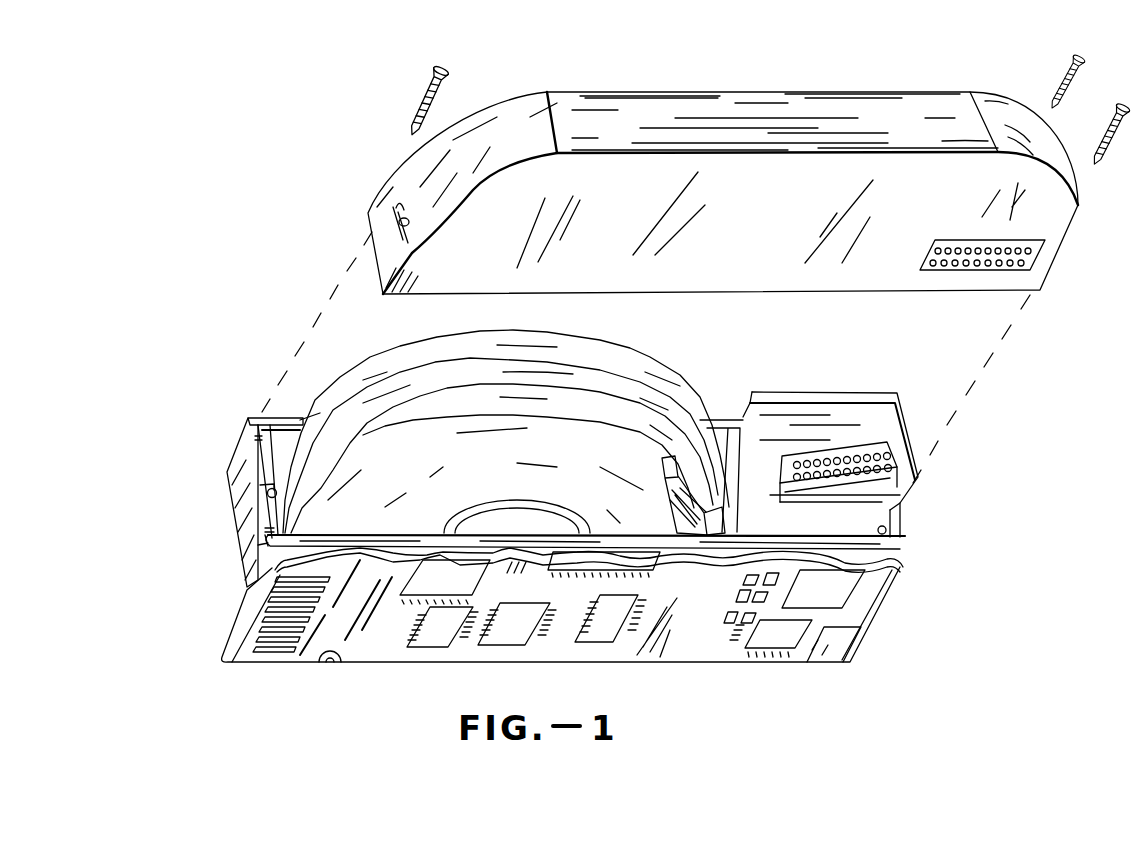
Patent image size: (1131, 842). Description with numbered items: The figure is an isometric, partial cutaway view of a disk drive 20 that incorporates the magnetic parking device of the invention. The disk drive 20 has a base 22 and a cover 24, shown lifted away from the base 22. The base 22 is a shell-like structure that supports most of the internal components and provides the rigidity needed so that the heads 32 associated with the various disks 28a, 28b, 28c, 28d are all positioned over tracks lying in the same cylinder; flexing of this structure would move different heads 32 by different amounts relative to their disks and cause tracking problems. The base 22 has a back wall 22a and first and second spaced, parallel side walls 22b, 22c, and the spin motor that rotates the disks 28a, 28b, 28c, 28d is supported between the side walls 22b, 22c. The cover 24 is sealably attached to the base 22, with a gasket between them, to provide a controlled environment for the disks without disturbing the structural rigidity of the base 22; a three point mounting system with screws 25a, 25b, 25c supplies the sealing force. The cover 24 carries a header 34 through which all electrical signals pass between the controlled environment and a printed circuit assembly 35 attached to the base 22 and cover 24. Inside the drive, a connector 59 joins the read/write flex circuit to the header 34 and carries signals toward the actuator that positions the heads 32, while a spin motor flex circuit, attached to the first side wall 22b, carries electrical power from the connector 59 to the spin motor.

The disk drive 20 is at (912, 582).
The base 22 is at (549, 483).
The back wall 22a is at (233, 503).
The first side wall 22b is at (248, 418).
The second side wall 22c is at (258, 548).
The cover 24 is at (1053, 262).
The screw 25a is at (430, 97).
The screw 25b is at (1080, 78).
The screw 25c is at (1122, 128).
The disk 28a is at (383, 352).
The disk 28b is at (440, 345).
The disk 28c is at (527, 384).
The disk 28d is at (603, 423).
The head 32 is at (660, 465).
The header 34 is at (1078, 213).
The printed circuit assembly 35 is at (853, 632).
The connector 59 is at (883, 476).